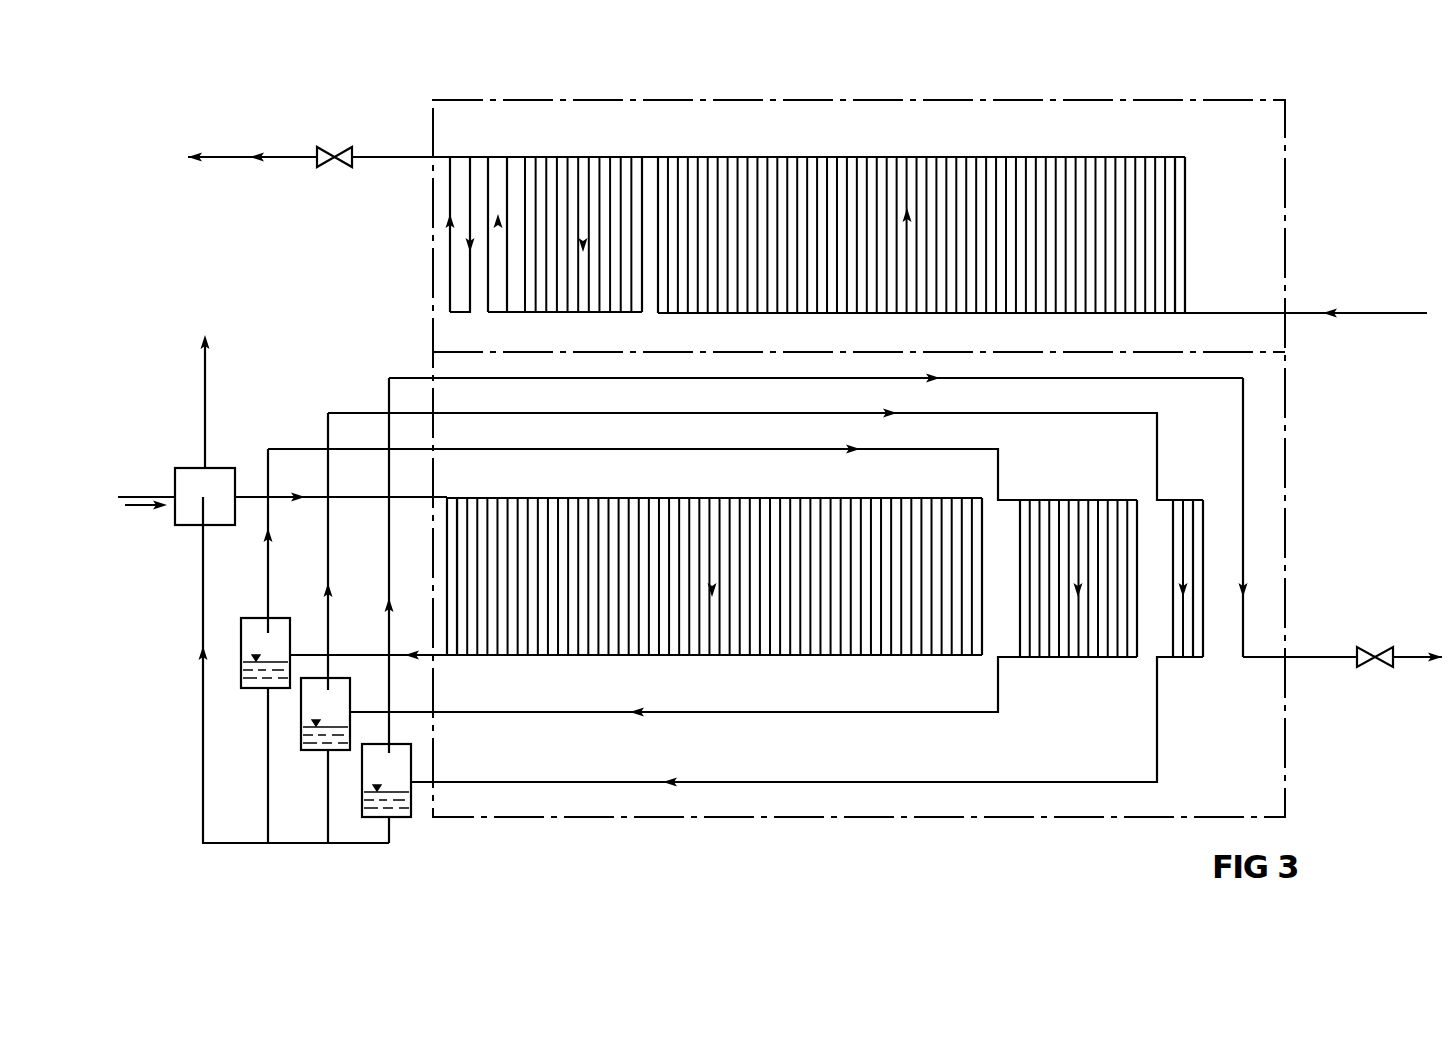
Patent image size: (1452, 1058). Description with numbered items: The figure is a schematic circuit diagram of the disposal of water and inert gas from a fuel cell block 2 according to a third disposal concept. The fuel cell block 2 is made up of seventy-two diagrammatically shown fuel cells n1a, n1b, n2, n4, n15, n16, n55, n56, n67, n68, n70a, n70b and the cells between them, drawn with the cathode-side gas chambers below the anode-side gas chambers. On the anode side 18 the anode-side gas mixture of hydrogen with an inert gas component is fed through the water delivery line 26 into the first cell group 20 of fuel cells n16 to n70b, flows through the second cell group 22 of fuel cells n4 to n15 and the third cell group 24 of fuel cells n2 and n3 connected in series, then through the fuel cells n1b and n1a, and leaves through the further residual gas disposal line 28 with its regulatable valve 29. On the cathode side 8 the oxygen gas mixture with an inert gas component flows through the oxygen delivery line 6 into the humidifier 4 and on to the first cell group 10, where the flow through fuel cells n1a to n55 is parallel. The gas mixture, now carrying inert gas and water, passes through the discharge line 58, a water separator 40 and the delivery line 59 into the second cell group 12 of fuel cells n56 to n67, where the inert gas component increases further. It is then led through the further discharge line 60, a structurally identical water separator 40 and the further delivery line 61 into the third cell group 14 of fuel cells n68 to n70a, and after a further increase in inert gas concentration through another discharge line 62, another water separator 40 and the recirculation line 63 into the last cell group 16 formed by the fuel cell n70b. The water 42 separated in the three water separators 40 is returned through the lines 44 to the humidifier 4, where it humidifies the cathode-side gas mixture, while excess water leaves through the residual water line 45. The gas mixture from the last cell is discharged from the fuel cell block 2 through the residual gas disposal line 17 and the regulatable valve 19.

The fuel cell block 2 is at (1289, 162).
The humidifier 4 is at (218, 448).
The oxygen delivery line 6 is at (146, 496).
The cathode side 8 is at (1287, 435).
The first cell group 10 is at (706, 658).
The second cell group 12 is at (1052, 659).
The third cell group 14 is at (1184, 659).
The cell group 16 is at (1245, 580).
The residual gas disposal line 17 is at (1299, 656).
The anode side 18 is at (1287, 222).
The valve 19 is at (1364, 656).
The first cell group 20 is at (830, 315).
The second cell group 22 is at (576, 314).
The third cell group 24 is at (494, 314).
The water delivery line 26 is at (1331, 316).
The further residual gas disposal line 28 is at (373, 157).
The valve 29 is at (348, 148).
The water separator 40 is at (255, 618).
The water 42 is at (255, 680).
The lines 44 is at (285, 845).
The residual water line 45 is at (203, 368).
The discharge line 58 is at (338, 655).
The delivery line 59 is at (266, 563).
The further discharge line 60 is at (524, 711).
The further delivery line 61 is at (326, 563).
The another discharge line 62 is at (508, 763).
The recirculation line 63 is at (387, 563).
The fuel cell n1a is at (448, 193).
The fuel cell n1b is at (468, 183).
The fuel cell n2 is at (493, 182).
The fuel cell n4 is at (530, 180).
The fuel cell n15 is at (638, 180).
The fuel cell n16 is at (662, 180).
The fuel cell n55 is at (976, 510).
The fuel cell n56 is at (1025, 514).
The fuel cell n67 is at (1132, 514).
The fuel cell n68 is at (1178, 512).
The fuel cell n70a is at (1172, 178).
The fuel cell n70b is at (1184, 178).